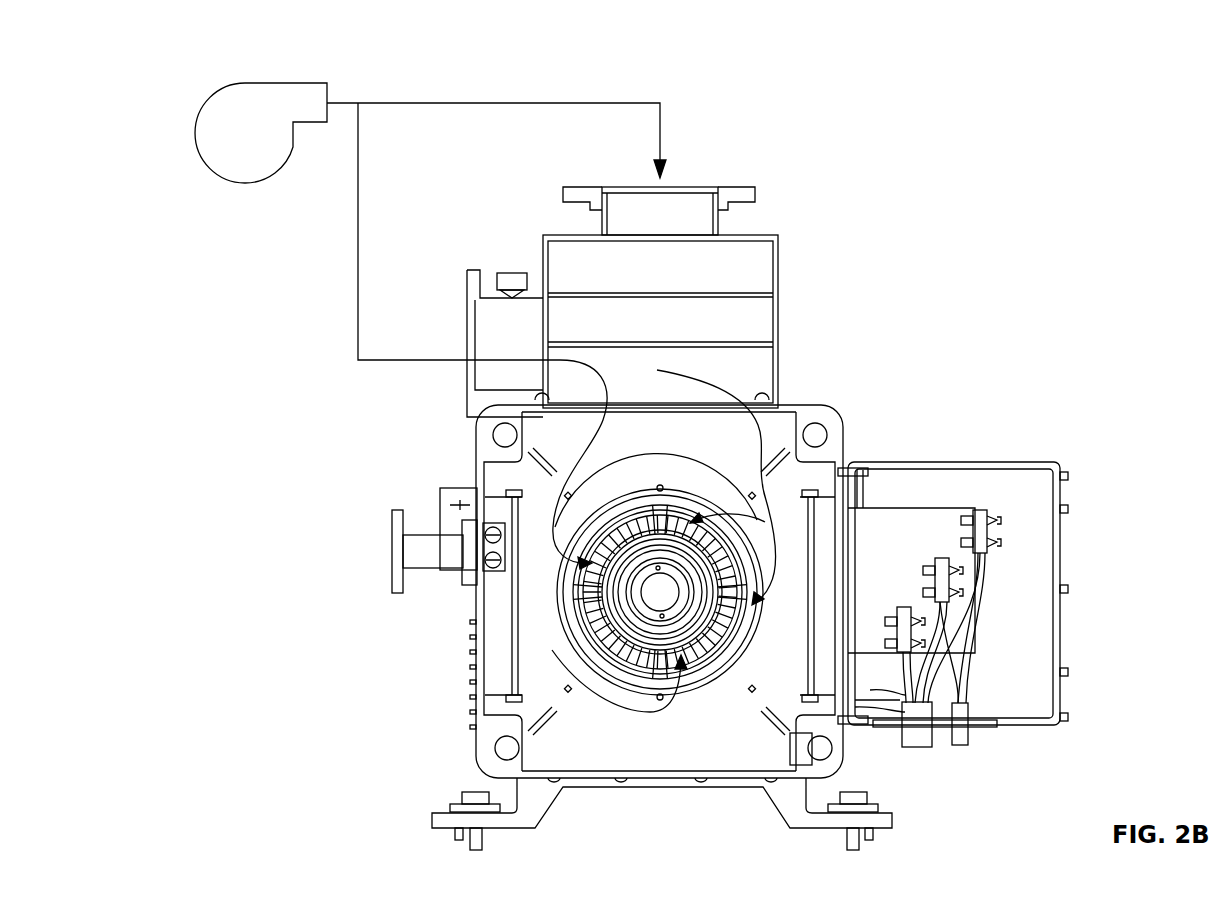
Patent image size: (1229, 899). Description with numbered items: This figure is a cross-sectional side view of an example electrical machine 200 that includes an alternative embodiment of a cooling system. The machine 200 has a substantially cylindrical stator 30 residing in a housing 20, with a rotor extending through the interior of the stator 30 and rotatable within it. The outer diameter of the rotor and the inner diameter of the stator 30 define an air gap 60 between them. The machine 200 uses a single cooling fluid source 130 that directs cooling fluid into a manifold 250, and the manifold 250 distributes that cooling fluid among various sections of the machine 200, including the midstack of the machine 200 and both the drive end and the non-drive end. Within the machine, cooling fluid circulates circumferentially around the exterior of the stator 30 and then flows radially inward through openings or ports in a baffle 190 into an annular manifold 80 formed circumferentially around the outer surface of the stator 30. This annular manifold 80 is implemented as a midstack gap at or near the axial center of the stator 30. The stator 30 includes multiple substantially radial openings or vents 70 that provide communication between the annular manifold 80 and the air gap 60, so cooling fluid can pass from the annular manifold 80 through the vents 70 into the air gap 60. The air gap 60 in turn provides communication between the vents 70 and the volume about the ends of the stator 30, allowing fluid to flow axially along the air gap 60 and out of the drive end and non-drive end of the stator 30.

The electrical machine 200 is at (631, 454).
The cooling fluid source 130 is at (268, 84).
The manifold 250 is at (780, 304).
The annular manifold 80 is at (637, 500).
The vents 70 is at (663, 506).
The baffle 190 is at (698, 457).
The stator 30 is at (704, 624).
The air gap 60 is at (702, 645).
The housing 20 is at (611, 787).